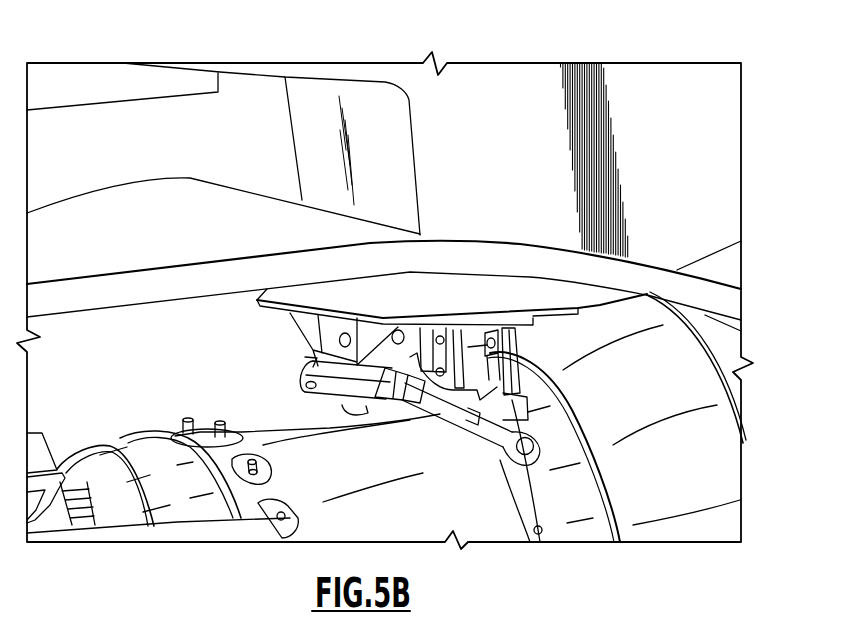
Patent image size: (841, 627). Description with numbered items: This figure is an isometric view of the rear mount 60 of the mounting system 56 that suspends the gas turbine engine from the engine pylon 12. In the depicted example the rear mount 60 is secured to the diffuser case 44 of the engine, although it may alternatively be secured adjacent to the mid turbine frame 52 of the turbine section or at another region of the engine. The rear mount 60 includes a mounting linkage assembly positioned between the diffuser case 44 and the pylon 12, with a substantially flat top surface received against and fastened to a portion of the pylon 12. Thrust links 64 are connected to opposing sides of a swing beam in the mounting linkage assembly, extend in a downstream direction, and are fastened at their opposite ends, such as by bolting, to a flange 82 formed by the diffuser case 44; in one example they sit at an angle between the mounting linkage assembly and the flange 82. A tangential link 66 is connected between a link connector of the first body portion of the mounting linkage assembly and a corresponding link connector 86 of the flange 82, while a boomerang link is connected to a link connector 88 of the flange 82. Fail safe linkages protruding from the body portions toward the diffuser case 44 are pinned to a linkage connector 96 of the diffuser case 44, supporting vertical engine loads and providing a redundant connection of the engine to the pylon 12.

The engine pylon 12 is at (515, 102).
The mounting system 56 is at (298, 59).
The diffuser case 44 is at (478, 527).
The mid turbine frame 52 is at (546, 539).
The rear mount 60 is at (366, 410).
The thrust links 64 is at (455, 420).
The tangential link 66 is at (528, 365).
The flange 82 is at (545, 505).
The link connector 86 is at (533, 417).
The link connector 88 is at (442, 333).
The linkage connector 96 is at (430, 413).